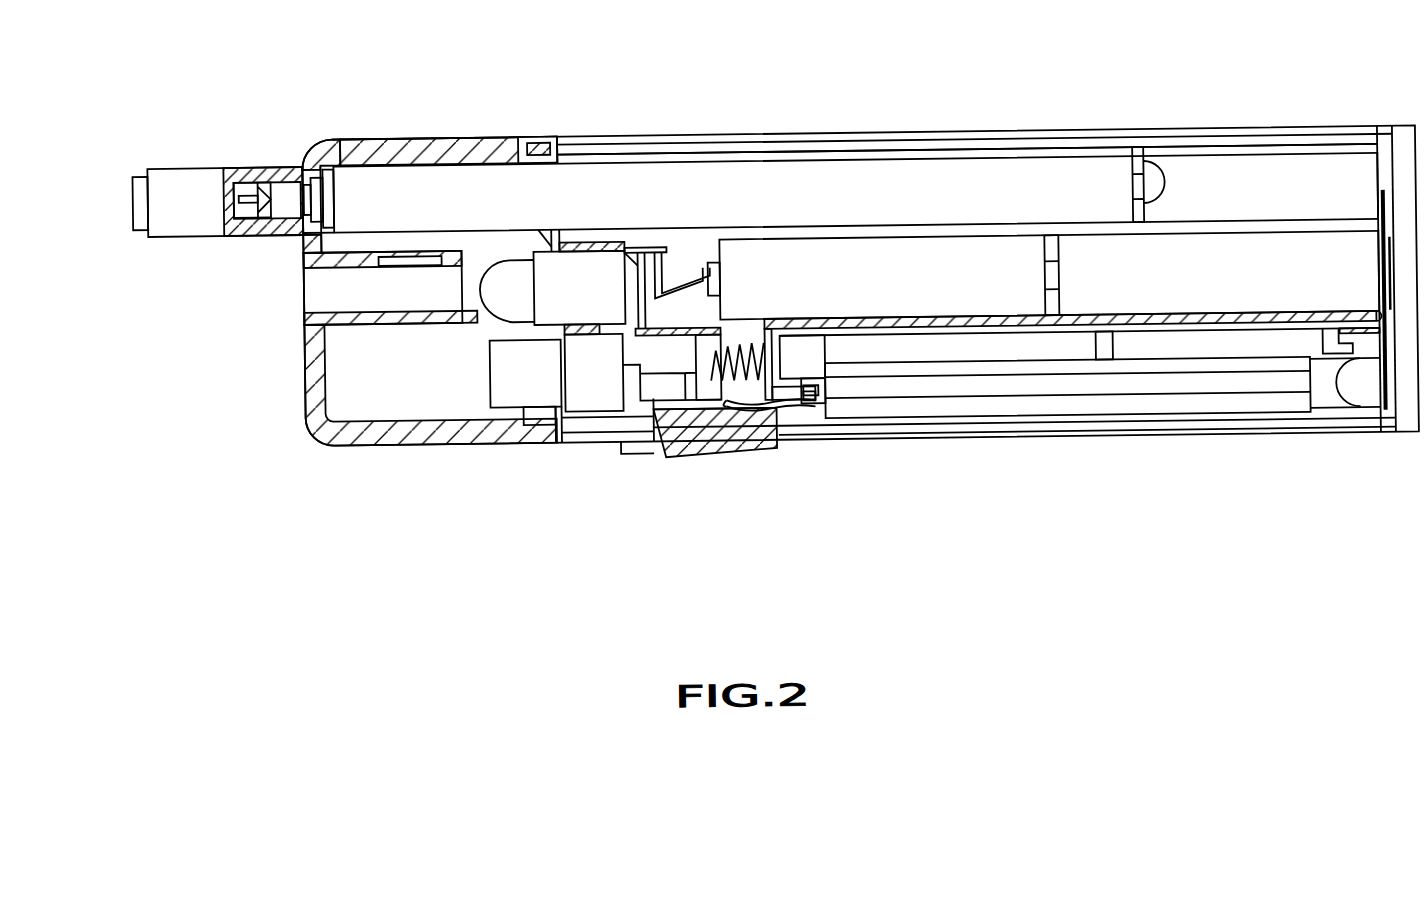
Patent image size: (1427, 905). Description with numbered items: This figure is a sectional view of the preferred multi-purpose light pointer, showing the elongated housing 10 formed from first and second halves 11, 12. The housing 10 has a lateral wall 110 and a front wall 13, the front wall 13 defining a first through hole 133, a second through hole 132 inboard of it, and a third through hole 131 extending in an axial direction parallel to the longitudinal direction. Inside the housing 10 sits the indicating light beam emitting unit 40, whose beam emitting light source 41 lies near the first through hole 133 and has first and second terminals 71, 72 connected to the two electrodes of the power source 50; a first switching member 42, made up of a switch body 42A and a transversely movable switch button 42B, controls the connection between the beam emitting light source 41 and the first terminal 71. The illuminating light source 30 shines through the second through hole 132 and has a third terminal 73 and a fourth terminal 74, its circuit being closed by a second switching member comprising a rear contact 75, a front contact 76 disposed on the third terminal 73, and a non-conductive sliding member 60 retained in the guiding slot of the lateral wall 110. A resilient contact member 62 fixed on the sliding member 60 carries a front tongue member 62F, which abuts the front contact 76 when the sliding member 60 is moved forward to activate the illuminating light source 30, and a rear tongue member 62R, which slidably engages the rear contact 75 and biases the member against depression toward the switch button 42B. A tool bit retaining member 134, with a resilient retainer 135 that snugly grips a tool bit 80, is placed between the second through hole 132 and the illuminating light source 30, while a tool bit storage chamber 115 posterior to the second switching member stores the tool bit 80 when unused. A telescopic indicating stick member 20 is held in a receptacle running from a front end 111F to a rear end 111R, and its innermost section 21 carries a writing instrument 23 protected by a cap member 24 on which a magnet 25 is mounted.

The housing 10 is at (1171, 131).
The first half 11 is at (900, 134).
The second half 12 is at (967, 149).
The front wall 13 is at (300, 246).
The telescopic indicating stick member 20 is at (777, 193).
The innermost section 21 is at (333, 208).
The writing instrument 23 is at (247, 182).
The cap member 24 is at (163, 181).
The magnet 25 is at (133, 195).
The illuminating light source 30 is at (584, 273).
The indicating light beam emitting unit 40 is at (573, 398).
The beam emitting light source 41 is at (490, 381).
The first switching member 42 is at (628, 365).
The switch body 42A is at (667, 378).
The switch button 42B is at (652, 458).
The power source 50 is at (1001, 300).
The sliding member 60 is at (760, 457).
The resilient contact member 62 is at (790, 406).
The front tongue member 62F is at (735, 412).
The rear tongue member 62R is at (785, 402).
The first terminal 71 is at (750, 357).
The second terminal 72 is at (580, 350).
The third terminal 73 is at (699, 462).
The fourth terminal 74 is at (667, 256).
The rear contact 75 is at (1225, 322).
The front contact 76 is at (715, 409).
The tool bit 80 is at (1239, 403).
The lateral wall 110 is at (1088, 135).
The front end 111F is at (303, 160).
The rear end 111R is at (1133, 173).
The tool bit storage chamber 115 is at (1155, 432).
The third through hole 131 is at (308, 168).
The second through hole 132 is at (300, 280).
The first through hole 133 is at (298, 378).
The tool bit retaining member 134 is at (310, 313).
The resilient retainer 135 is at (438, 258).